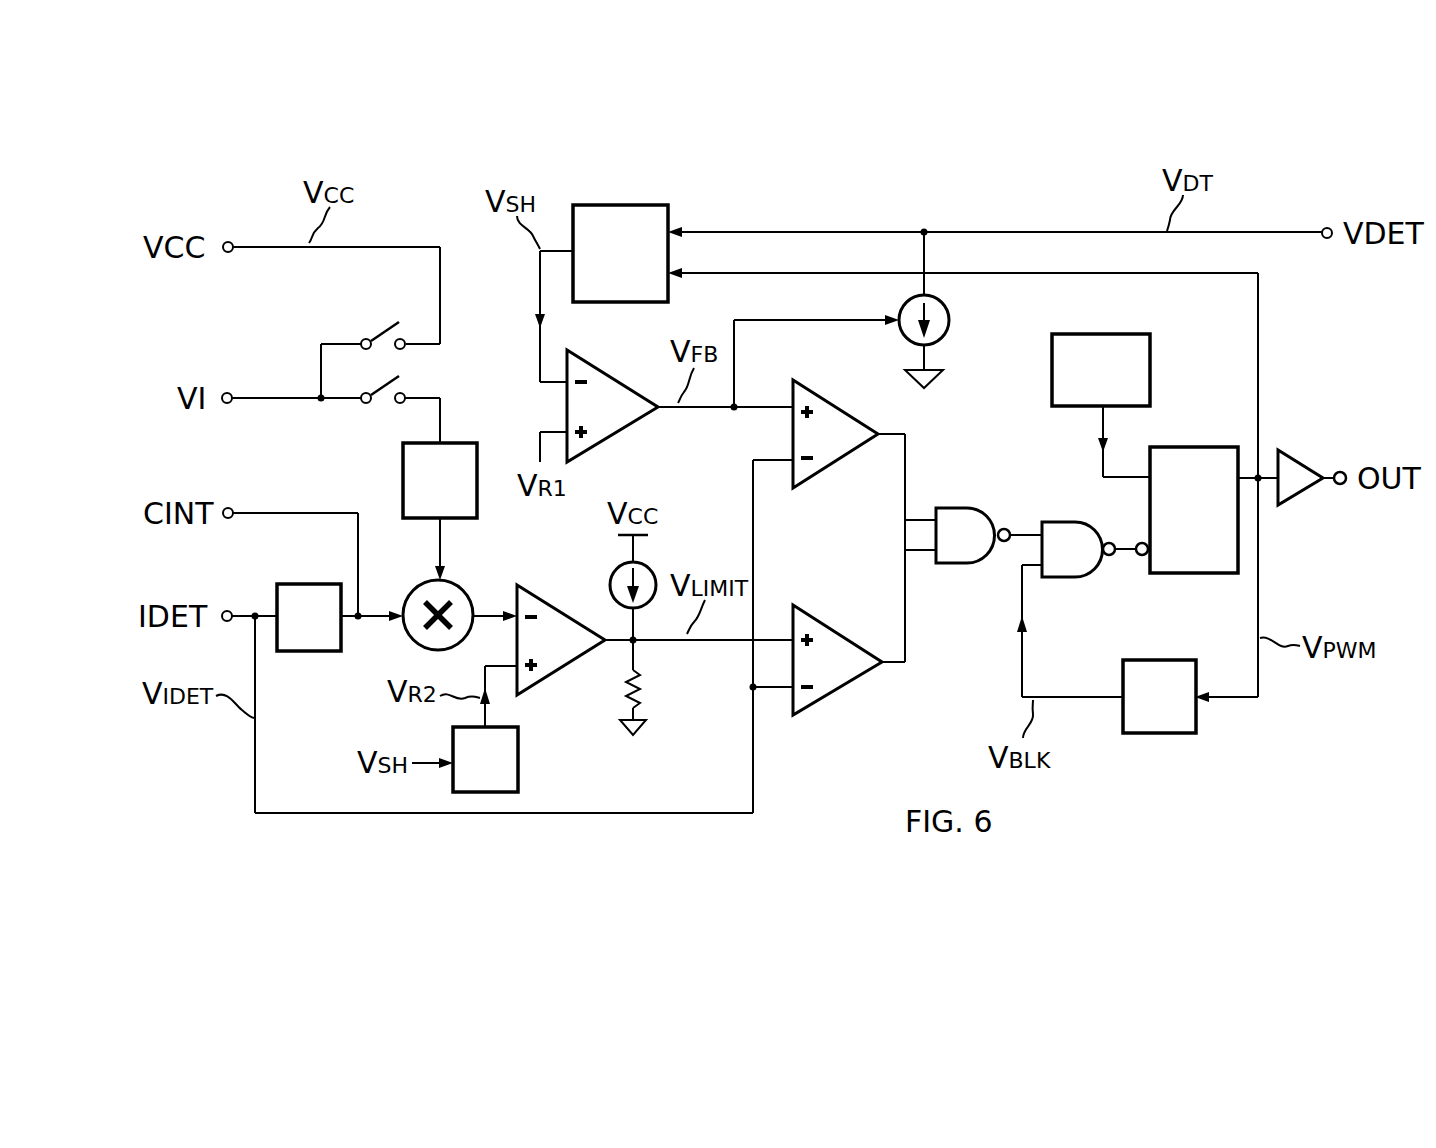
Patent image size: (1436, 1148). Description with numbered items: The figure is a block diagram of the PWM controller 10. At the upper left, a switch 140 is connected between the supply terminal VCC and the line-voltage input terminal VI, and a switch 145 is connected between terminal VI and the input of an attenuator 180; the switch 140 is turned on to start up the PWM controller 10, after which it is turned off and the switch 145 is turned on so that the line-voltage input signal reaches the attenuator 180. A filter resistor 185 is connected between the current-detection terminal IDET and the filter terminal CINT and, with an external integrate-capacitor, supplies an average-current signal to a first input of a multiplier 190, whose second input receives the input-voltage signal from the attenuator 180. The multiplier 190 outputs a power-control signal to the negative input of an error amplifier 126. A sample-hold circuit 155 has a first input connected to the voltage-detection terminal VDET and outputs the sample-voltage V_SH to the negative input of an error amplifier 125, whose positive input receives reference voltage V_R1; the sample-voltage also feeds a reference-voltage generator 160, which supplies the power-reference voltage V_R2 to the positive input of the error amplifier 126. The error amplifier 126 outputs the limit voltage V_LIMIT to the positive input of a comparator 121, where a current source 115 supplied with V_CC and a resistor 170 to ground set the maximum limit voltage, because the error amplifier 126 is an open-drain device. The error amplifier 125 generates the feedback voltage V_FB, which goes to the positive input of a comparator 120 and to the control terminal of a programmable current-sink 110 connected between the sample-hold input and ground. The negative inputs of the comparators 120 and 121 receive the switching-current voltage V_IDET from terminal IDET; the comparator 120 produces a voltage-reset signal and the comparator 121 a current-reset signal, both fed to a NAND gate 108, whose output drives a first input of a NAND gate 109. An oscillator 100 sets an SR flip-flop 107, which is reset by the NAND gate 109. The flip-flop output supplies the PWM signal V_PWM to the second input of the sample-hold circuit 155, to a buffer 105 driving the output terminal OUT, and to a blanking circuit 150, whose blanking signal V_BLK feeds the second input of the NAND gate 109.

The PWM controller 10 is at (1306, 147).
The oscillator 100 is at (1155, 366).
The buffer 105 is at (1302, 457).
The SR flip-flop 107 is at (1196, 577).
The NAND gate 108 is at (965, 568).
The NAND gate 109 is at (1071, 581).
The programmable current-sink 110 is at (953, 320).
The current source 115 is at (611, 584).
The comparator 120 is at (833, 469).
The comparator 121 is at (840, 695).
The error amplifier 125 is at (605, 374).
The error amplifier 126 is at (551, 686).
The switch 140 is at (378, 333).
The switch 145 is at (381, 412).
The blanking circuit 150 is at (1158, 735).
The sample-hold circuit 155 is at (614, 200).
The reference-voltage generator 160 is at (520, 775).
The resistor 170 is at (650, 683).
The attenuator 180 is at (468, 442).
The filter resistor 185 is at (310, 655).
The multiplier 190 is at (466, 592).